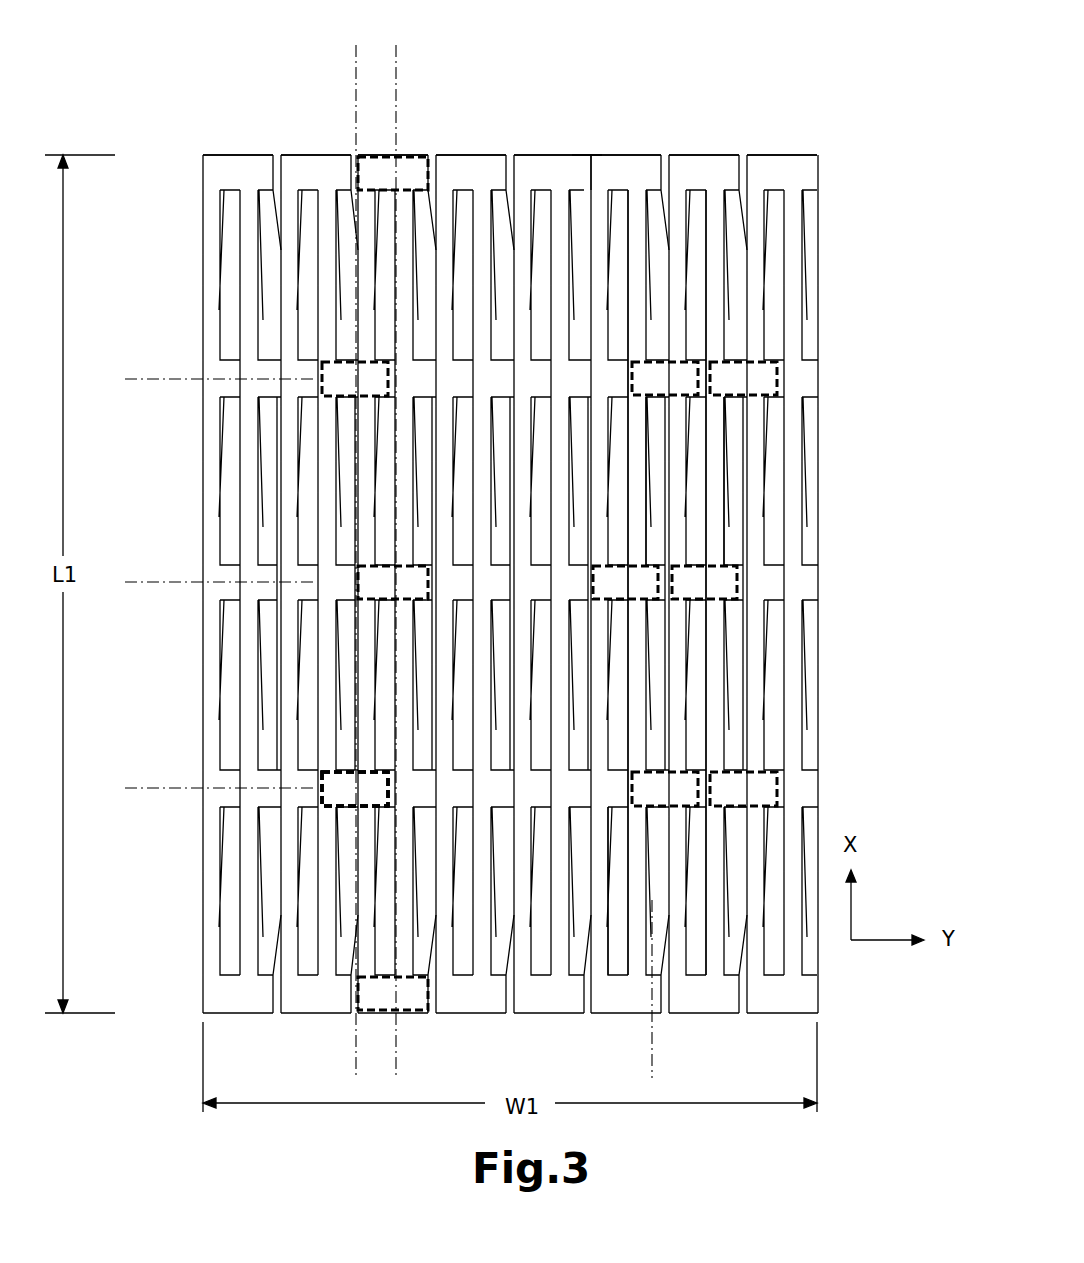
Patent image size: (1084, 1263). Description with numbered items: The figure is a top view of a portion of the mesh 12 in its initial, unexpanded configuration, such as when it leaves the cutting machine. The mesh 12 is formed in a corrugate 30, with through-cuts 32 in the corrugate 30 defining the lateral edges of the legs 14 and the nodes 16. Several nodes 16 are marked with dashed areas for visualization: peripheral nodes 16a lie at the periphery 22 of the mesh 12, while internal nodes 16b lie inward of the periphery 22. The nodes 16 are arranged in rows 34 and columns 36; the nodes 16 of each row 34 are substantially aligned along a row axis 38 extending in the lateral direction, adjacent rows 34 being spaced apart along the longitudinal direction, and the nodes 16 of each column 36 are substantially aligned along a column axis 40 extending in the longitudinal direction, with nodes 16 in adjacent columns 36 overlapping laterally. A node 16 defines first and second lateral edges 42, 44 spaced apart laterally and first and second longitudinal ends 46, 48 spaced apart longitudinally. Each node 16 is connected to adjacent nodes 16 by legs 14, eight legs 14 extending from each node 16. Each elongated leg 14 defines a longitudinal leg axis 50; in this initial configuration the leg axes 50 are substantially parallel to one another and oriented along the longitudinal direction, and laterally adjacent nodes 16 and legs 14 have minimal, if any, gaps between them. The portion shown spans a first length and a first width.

The mesh 12 is at (826, 218).
The legs 14 is at (735, 471).
The nodes 16 is at (733, 381).
The peripheral nodes 16a is at (418, 154).
The internal nodes 16b is at (338, 384).
The periphery 22 is at (700, 152).
The corrugate 30 is at (572, 581).
The through-cuts 32 is at (624, 232).
The rows 34 is at (201, 589).
The columns 36 is at (373, 553).
The row axis 38 is at (160, 378).
The column axis 40 is at (354, 95).
The first lateral edge 42 is at (345, 792).
The second lateral edge 44 is at (383, 794).
The first longitudinal end 46 is at (358, 776).
The second longitudinal end 48 is at (350, 810).
The longitudinal leg axis 50 is at (655, 1062).